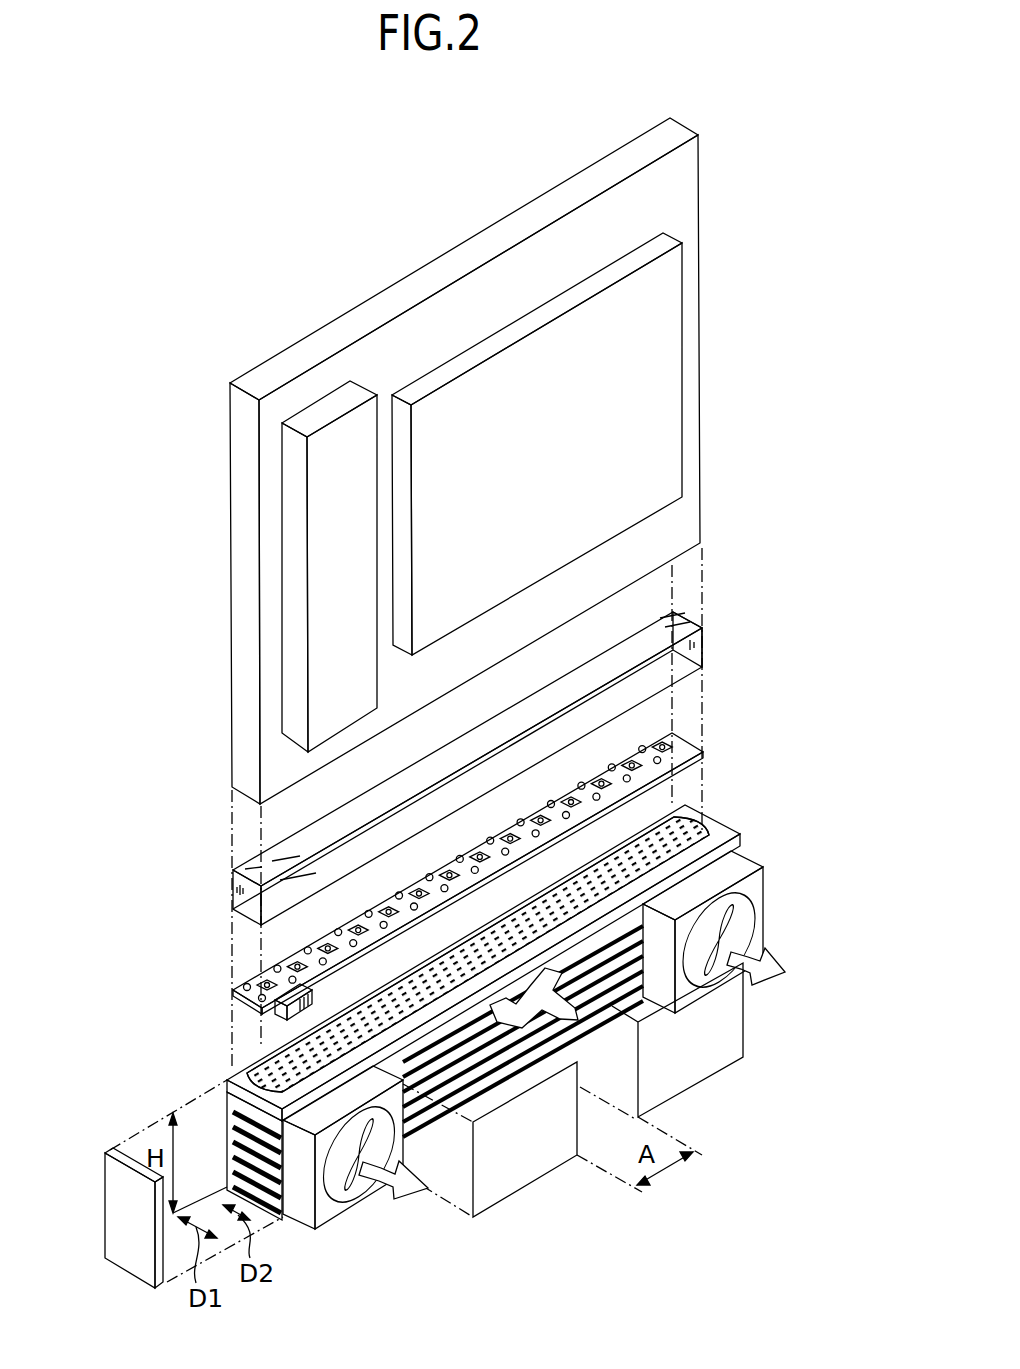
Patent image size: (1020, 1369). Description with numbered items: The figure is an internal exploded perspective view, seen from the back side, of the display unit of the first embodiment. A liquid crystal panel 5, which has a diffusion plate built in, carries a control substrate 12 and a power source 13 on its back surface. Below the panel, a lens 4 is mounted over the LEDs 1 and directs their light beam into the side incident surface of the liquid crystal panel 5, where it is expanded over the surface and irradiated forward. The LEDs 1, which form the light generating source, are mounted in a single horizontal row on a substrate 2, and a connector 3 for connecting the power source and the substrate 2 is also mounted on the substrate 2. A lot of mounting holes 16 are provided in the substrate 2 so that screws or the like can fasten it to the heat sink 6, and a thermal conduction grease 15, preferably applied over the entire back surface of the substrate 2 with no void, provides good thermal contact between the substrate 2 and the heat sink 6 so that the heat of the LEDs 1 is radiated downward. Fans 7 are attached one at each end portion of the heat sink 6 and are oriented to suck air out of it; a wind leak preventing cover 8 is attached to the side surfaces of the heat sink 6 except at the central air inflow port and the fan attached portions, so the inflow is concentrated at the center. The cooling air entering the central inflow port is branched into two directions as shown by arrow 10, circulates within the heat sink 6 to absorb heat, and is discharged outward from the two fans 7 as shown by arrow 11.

The LED 1 is at (479, 875).
The substrate 2 is at (703, 755).
The connector 3 is at (273, 1013).
The lens 4 is at (714, 648).
The liquid crystal panel 5 is at (705, 393).
The heat sink 6 is at (513, 999).
The fan 7 is at (752, 887).
The wind leak preventing cover 8 is at (118, 1216).
The arrow 10 is at (560, 1012).
The arrow 11 is at (770, 982).
The control substrate 12 is at (575, 428).
The power source 13 is at (335, 557).
The thermal conduction grease 15 is at (702, 807).
The mounting hole 16 is at (503, 857).